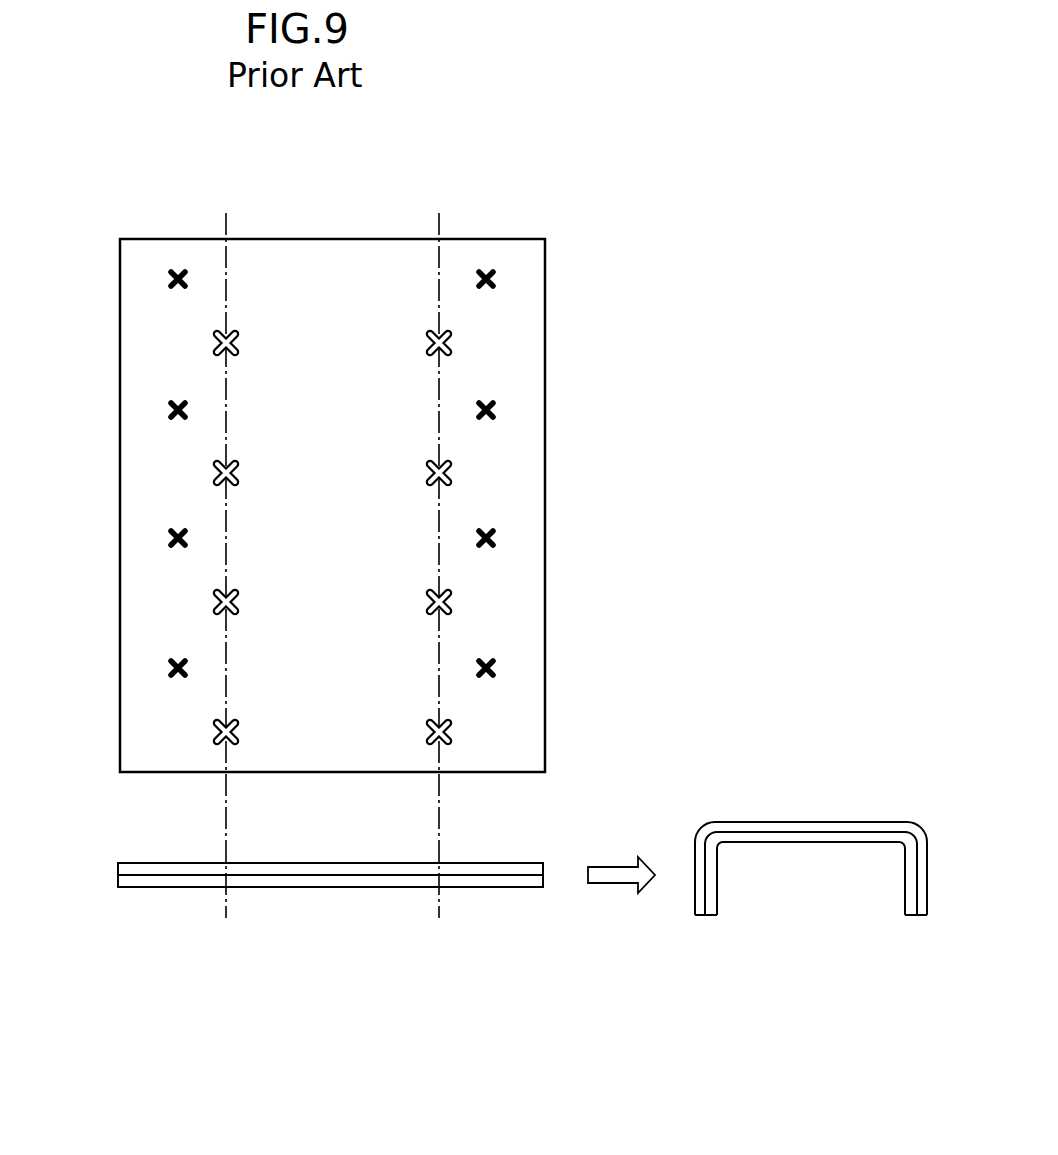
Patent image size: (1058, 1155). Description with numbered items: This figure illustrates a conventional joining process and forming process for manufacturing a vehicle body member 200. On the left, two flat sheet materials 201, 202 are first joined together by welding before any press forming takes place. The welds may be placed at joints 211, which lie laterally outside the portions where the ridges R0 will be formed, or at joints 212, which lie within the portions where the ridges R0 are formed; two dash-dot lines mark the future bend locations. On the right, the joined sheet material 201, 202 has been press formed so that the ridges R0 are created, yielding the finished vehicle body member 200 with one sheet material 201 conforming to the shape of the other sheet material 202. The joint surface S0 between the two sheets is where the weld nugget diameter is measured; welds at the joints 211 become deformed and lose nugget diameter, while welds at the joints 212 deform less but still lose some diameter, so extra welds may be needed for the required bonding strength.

The vehicle body member 200 is at (867, 784).
The sheet material 201 is at (483, 239).
The sheet material 202 is at (487, 887).
The joints 211 is at (170, 406).
The joints 212 is at (235, 472).
The ridges R0 is at (226, 272).
The joint surface S0 is at (912, 915).